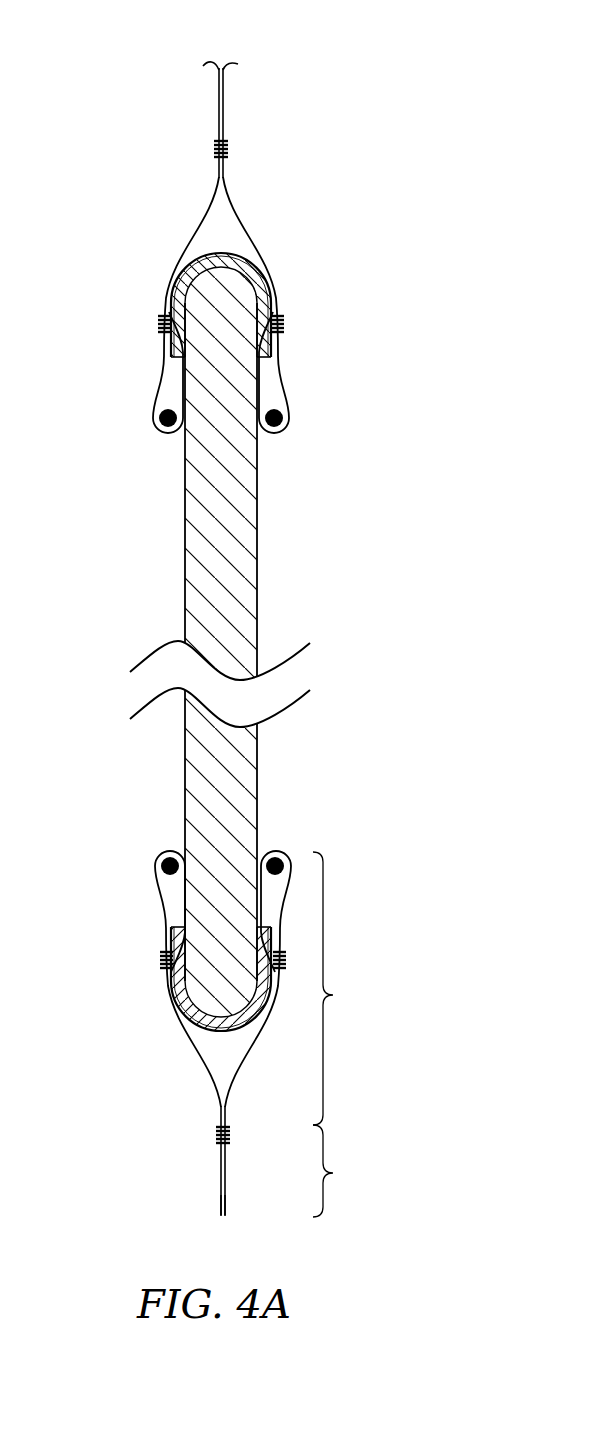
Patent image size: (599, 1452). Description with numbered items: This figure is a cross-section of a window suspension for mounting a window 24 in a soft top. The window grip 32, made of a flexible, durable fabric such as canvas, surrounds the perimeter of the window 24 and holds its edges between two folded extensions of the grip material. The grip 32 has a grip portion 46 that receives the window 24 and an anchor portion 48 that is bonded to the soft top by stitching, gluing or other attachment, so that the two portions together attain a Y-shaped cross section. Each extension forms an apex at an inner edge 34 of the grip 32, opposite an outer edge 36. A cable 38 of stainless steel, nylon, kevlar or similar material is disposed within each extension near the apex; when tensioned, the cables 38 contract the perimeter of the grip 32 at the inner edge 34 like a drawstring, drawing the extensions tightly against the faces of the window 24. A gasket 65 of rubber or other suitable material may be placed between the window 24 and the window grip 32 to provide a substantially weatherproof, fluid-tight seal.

The window 24 is at (225, 545).
The window grip 32 is at (114, 241).
The inner edge 34 is at (208, 57).
The outer edge 36 is at (206, 1203).
The cable 38 is at (287, 422).
The grip portion 46 is at (341, 988).
The anchor portion 48 is at (341, 1171).
The gasket 65 is at (228, 252).